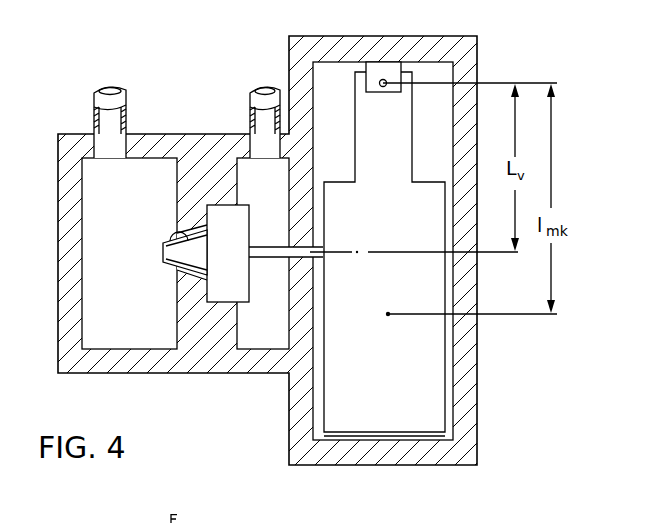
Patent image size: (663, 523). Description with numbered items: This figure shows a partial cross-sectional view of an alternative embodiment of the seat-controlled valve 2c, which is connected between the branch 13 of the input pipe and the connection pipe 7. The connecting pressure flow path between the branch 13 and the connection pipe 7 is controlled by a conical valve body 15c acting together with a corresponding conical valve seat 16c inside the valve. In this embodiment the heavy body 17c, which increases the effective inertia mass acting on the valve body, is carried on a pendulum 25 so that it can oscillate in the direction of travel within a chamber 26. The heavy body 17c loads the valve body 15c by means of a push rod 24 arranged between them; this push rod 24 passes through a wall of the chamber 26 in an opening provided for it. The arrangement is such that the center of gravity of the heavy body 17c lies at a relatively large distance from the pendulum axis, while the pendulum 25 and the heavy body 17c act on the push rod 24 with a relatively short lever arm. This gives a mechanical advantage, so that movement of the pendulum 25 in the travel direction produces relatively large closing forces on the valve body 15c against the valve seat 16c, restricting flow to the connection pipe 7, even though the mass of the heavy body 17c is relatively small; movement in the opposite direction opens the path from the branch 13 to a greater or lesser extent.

The seat-controlled valve 2c is at (482, 375).
The heavy body 17c is at (393, 387).
The pendulum 25 is at (367, 137).
The chamber 26 is at (445, 436).
The push rod 24 is at (268, 258).
The valve body 15c is at (167, 257).
The valve seat 16c is at (173, 240).
The branch 13 is at (118, 102).
The connection pipe 7 is at (258, 97).